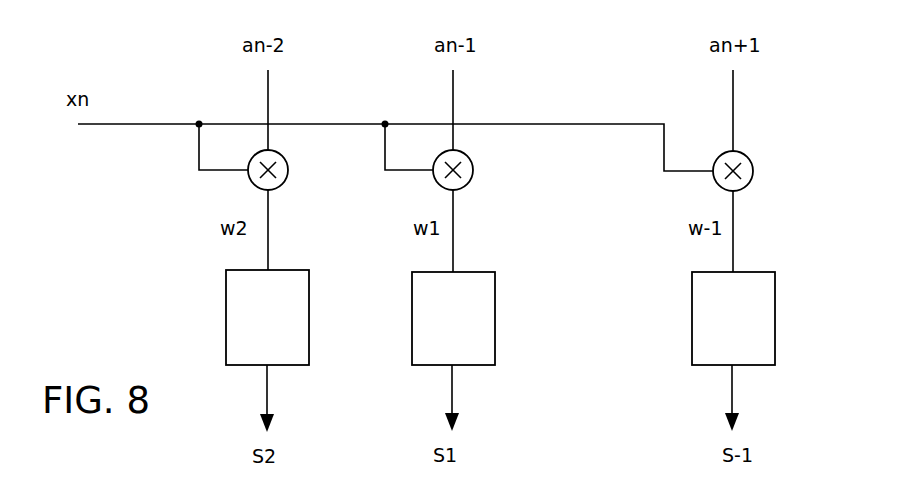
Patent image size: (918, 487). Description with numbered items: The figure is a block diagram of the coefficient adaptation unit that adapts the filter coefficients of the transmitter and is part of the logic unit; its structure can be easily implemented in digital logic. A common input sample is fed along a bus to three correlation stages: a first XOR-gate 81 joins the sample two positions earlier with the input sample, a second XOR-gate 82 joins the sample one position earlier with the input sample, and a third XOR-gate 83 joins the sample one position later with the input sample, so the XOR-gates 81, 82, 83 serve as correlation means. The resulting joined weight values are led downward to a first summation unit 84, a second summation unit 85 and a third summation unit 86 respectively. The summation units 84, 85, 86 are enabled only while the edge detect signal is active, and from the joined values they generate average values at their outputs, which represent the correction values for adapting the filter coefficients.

The first XOR-gate 81 is at (288, 170).
The second XOR-gate 82 is at (473, 170).
The third XOR-gate 83 is at (753, 171).
The first summation unit 84 is at (277, 280).
The second summation unit 85 is at (463, 280).
The third summation unit 86 is at (745, 280).